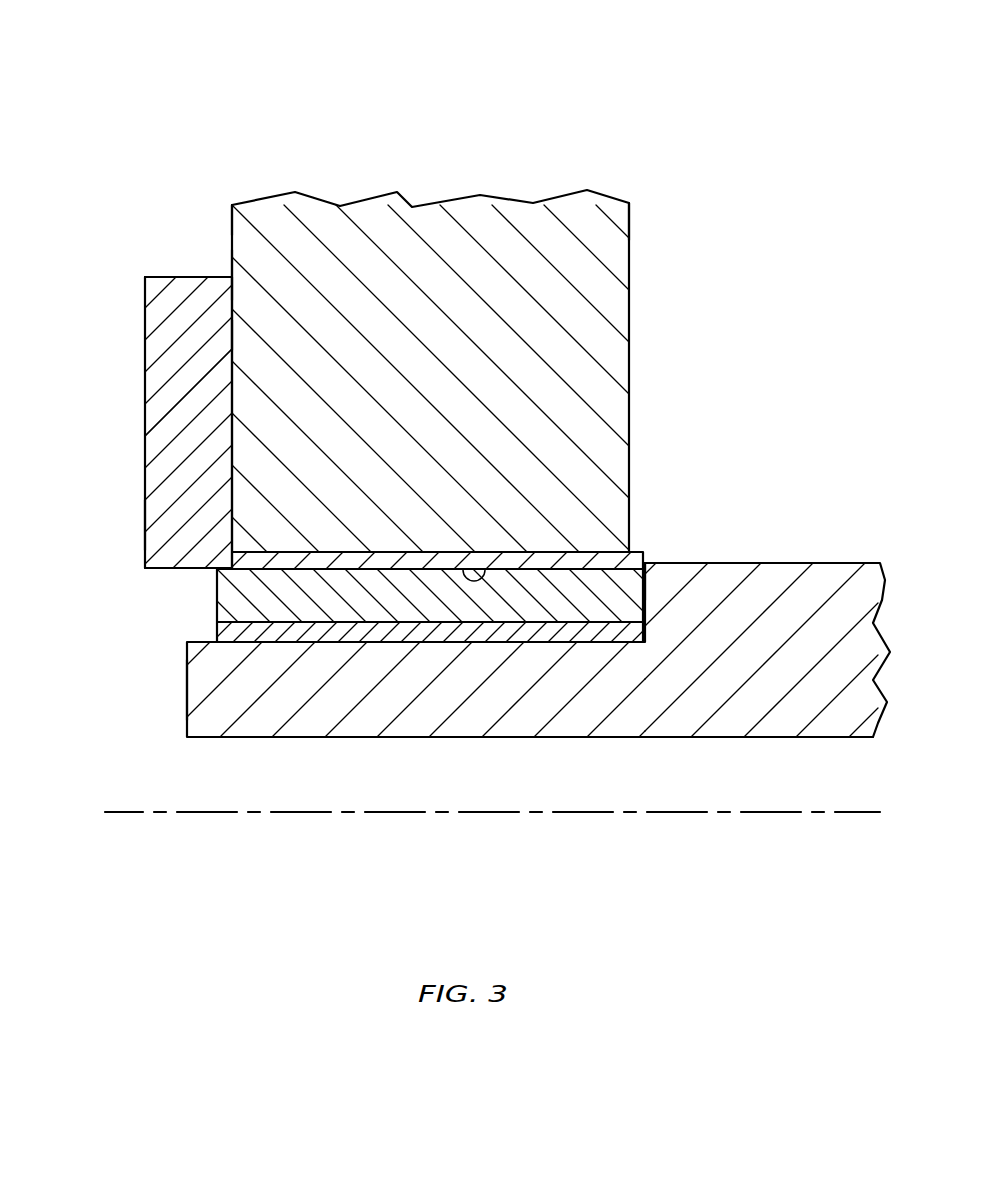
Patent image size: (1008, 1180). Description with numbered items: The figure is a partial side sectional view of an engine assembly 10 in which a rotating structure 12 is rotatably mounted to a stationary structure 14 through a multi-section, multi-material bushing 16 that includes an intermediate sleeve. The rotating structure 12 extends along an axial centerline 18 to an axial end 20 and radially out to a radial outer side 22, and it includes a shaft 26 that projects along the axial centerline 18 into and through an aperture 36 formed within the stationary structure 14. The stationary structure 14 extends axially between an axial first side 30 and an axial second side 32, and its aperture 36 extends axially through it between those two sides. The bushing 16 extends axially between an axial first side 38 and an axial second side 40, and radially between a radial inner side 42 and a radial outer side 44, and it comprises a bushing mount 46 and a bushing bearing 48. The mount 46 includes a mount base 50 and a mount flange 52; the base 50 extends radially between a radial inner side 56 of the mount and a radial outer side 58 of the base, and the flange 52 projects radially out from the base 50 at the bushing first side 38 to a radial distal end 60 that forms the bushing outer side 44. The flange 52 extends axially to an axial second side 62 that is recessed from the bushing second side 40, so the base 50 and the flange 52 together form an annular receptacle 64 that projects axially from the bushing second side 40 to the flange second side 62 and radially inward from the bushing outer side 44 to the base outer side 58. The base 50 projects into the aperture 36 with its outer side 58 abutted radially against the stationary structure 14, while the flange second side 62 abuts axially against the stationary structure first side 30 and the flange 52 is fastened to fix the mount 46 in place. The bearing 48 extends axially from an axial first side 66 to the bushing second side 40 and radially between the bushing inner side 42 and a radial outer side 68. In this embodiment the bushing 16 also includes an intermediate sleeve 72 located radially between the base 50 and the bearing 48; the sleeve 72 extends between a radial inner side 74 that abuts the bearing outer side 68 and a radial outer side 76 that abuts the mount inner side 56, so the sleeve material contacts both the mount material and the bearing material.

The engine assembly 10 is at (170, 82).
The rotating structure 12 is at (147, 688).
The stationary structure 14 is at (538, 190).
The bushing 16 is at (118, 525).
The axial centerline 18 is at (118, 813).
The axial end 20 is at (187, 713).
The radial outer side 22 is at (389, 642).
The shaft 26 is at (778, 550).
The axial first side 30 is at (232, 213).
The axial second side 32 is at (629, 223).
The aperture 36 is at (524, 540).
The axial first side 38 is at (145, 352).
The axial second side 40 is at (645, 560).
The radial inner side 42 is at (327, 643).
The radial outer side 44 is at (168, 277).
The bushing mount 46 is at (128, 561).
The bushing bearing 48 is at (287, 655).
The mount base 50 is at (397, 570).
The mount flange 52 is at (178, 416).
The radial inner side 56 is at (487, 570).
The radial outer side 58 is at (438, 552).
The radial distal end 60 is at (135, 263).
The axial second side 62 is at (232, 335).
The receptacle 64 is at (222, 265).
The axial first side 66 is at (217, 633).
The radial outer side 68 is at (332, 570).
The intermediate sleeve 72 is at (549, 633).
The radial inner side 74 is at (485, 622).
The radial outer side 76 is at (573, 570).